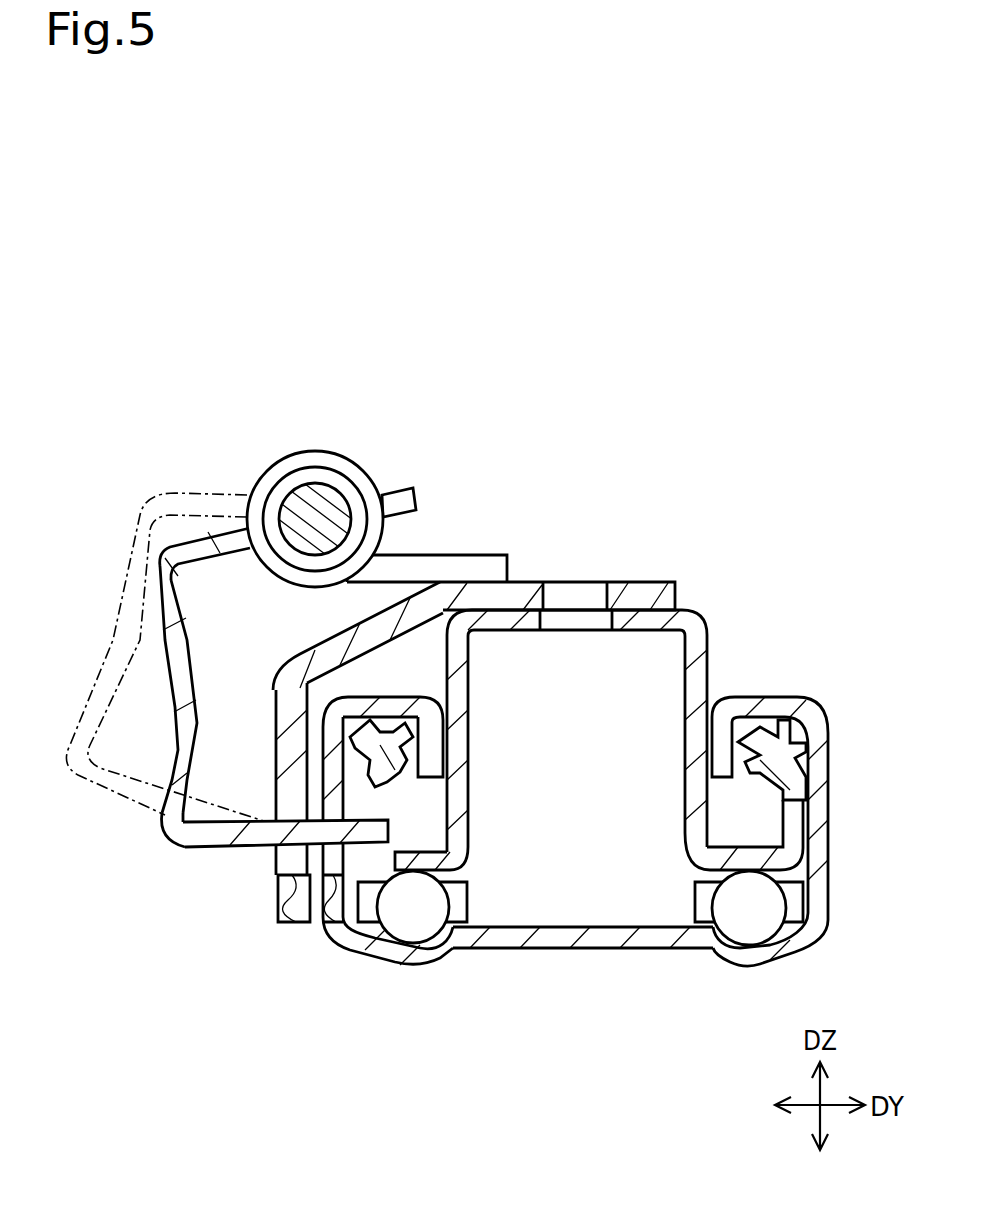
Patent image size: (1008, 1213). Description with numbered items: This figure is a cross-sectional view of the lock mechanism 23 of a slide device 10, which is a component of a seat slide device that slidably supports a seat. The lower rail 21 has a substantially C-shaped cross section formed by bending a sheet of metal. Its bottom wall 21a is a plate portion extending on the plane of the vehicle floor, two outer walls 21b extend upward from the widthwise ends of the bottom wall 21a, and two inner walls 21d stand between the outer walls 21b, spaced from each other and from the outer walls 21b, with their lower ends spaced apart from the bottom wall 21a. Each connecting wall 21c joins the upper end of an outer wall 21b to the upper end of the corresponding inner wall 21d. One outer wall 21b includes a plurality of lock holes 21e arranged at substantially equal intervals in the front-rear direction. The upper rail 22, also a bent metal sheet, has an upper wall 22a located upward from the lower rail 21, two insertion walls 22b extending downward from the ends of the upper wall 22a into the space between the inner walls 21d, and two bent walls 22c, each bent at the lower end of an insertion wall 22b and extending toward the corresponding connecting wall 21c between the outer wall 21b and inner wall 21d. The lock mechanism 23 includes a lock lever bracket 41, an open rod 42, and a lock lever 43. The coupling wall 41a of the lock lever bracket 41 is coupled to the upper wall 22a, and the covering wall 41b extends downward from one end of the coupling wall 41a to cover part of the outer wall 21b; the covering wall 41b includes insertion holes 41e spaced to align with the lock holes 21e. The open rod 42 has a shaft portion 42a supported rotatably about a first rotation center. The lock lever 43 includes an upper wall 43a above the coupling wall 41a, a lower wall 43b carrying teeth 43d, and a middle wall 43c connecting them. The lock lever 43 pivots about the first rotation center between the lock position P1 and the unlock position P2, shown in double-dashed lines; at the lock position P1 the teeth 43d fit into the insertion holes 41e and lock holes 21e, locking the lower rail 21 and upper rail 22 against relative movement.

The slide device 10 is at (688, 452).
The lower rail 21 is at (590, 794).
The bottom wall 21a is at (541, 950).
The outer wall 21b is at (318, 688).
The connecting wall 21c is at (402, 694).
The inner wall 21d is at (444, 742).
The lock hole 21e is at (338, 870).
The upper rail 22 is at (578, 683).
The upper wall 22a is at (638, 610).
The insertion wall 22b is at (469, 702).
The bent wall 22c is at (452, 832).
The lock mechanism 23 is at (331, 478).
The lock lever bracket 41 is at (446, 744).
The coupling wall 41a is at (520, 582).
The covering wall 41b is at (272, 763).
The insertion hole 41e is at (300, 870).
The open rod 42 is at (327, 487).
The shaft portion 42a is at (295, 485).
The lock lever 43 is at (201, 722).
The upper wall 43a is at (208, 562).
The lower wall 43b is at (193, 852).
The middle wall 43c is at (188, 648).
The teeth 43d is at (287, 838).
The lock position P1 is at (181, 535).
The unlock position P2 is at (143, 490).